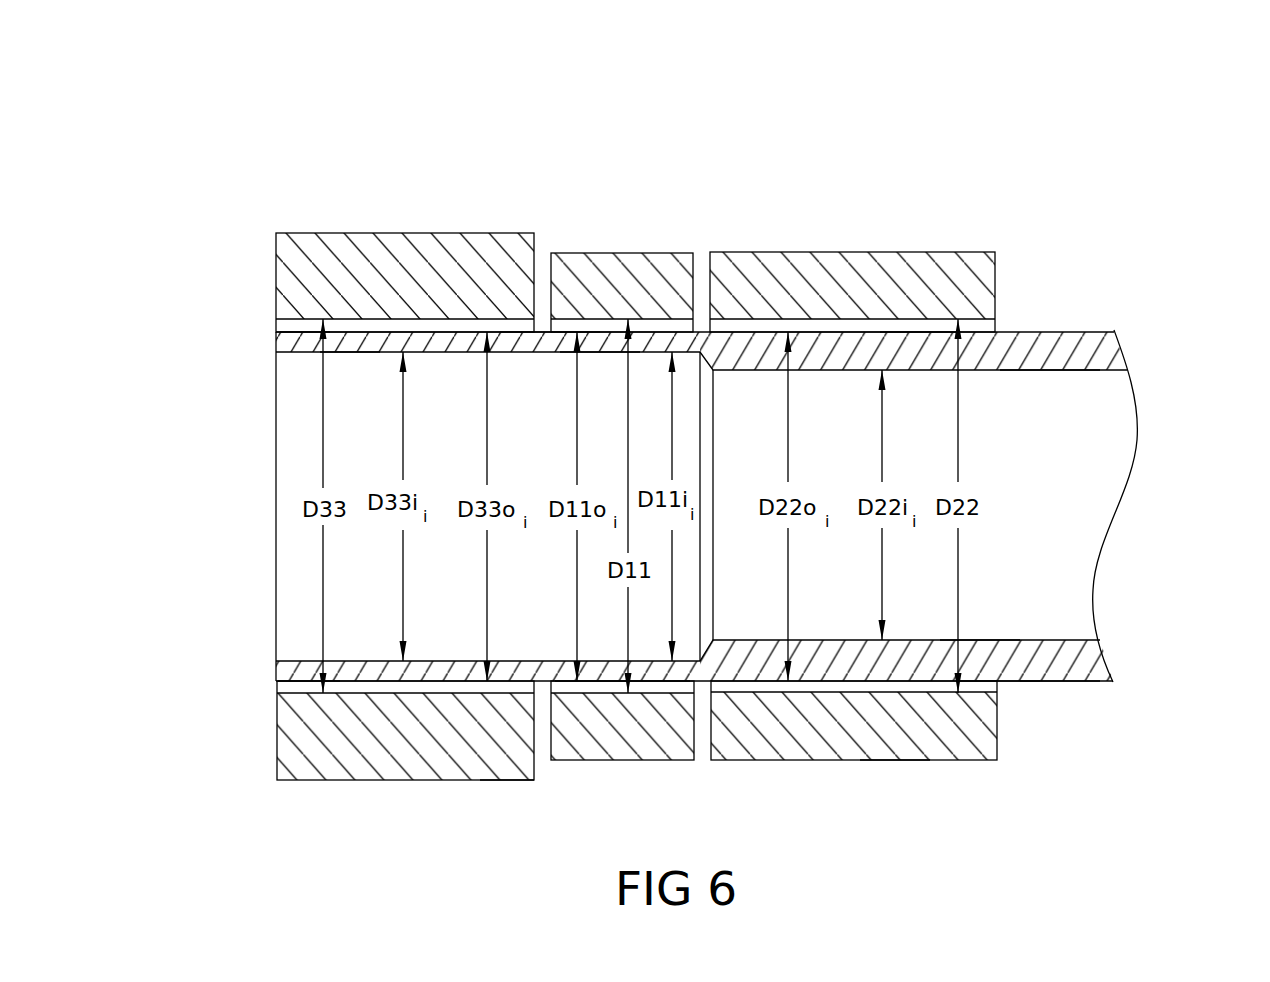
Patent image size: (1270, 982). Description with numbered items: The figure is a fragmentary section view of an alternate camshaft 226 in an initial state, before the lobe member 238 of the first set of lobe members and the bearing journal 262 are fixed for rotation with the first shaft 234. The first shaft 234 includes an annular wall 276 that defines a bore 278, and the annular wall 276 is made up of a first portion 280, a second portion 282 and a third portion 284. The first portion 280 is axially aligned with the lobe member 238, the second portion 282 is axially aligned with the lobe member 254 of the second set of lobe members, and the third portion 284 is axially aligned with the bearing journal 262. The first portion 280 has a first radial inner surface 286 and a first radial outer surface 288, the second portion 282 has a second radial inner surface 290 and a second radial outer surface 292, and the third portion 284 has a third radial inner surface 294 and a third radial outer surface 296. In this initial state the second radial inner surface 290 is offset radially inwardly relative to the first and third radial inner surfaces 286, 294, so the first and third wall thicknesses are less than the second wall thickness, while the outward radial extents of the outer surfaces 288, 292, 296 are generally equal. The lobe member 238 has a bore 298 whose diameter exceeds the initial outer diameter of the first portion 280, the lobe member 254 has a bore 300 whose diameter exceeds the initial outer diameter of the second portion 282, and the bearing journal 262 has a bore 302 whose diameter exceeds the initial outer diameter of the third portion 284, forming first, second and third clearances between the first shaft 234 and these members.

The camshaft 226 is at (693, 459).
The first shaft 234 is at (1110, 361).
The lobe member 238 is at (638, 253).
The lobe member 254 is at (888, 252).
The bearing journal 262 is at (345, 232).
The annular wall 276 is at (1057, 660).
The bore 278 is at (1045, 370).
The first portion 280 is at (553, 343).
The second portion 282 is at (916, 353).
The third portion 284 is at (293, 339).
The first radial inner surface 286 is at (596, 350).
The first radial outer surface 288 is at (653, 682).
The second radial inner surface 290 is at (982, 638).
The second radial outer surface 292 is at (884, 683).
The third radial inner surface 294 is at (342, 353).
The third radial outer surface 296 is at (497, 693).
The bore 298 is at (604, 692).
The bore 300 is at (973, 692).
The bore 302 is at (297, 690).